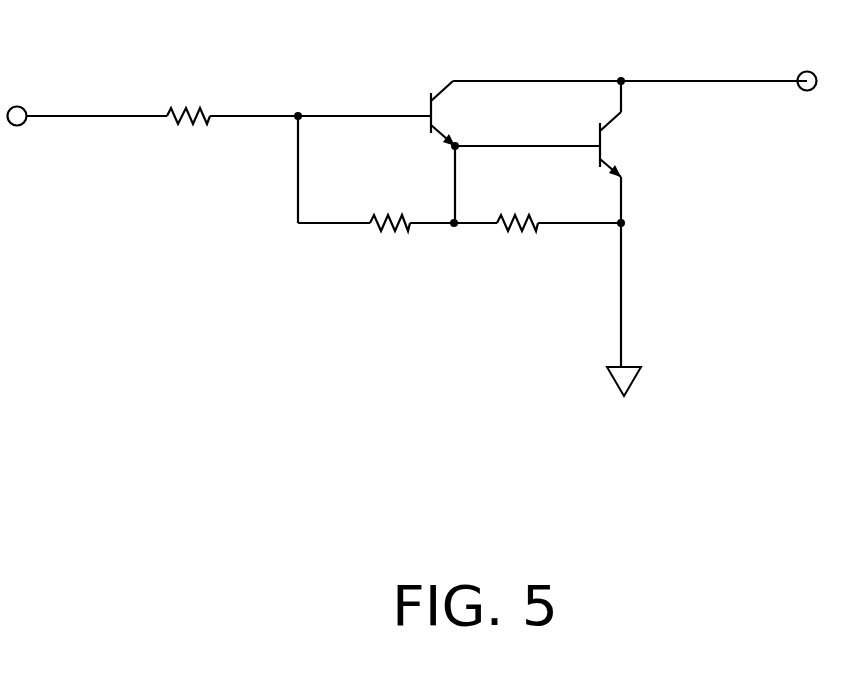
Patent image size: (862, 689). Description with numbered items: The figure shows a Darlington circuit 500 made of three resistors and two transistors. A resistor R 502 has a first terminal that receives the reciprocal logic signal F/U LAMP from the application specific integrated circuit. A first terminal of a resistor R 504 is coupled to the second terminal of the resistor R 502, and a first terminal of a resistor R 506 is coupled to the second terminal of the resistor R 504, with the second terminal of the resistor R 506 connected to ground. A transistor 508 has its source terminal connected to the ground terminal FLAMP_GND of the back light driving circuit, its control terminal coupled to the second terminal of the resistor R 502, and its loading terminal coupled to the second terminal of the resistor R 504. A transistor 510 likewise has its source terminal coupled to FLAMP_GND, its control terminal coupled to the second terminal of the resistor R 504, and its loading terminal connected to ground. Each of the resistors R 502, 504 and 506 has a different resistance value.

The Darlington circuit 500 is at (808, 370).
The resistor R 502 is at (186, 130).
The resistor R 504 is at (388, 236).
The resistor R 506 is at (517, 236).
The transistor 508 is at (442, 80).
The transistor 510 is at (610, 150).